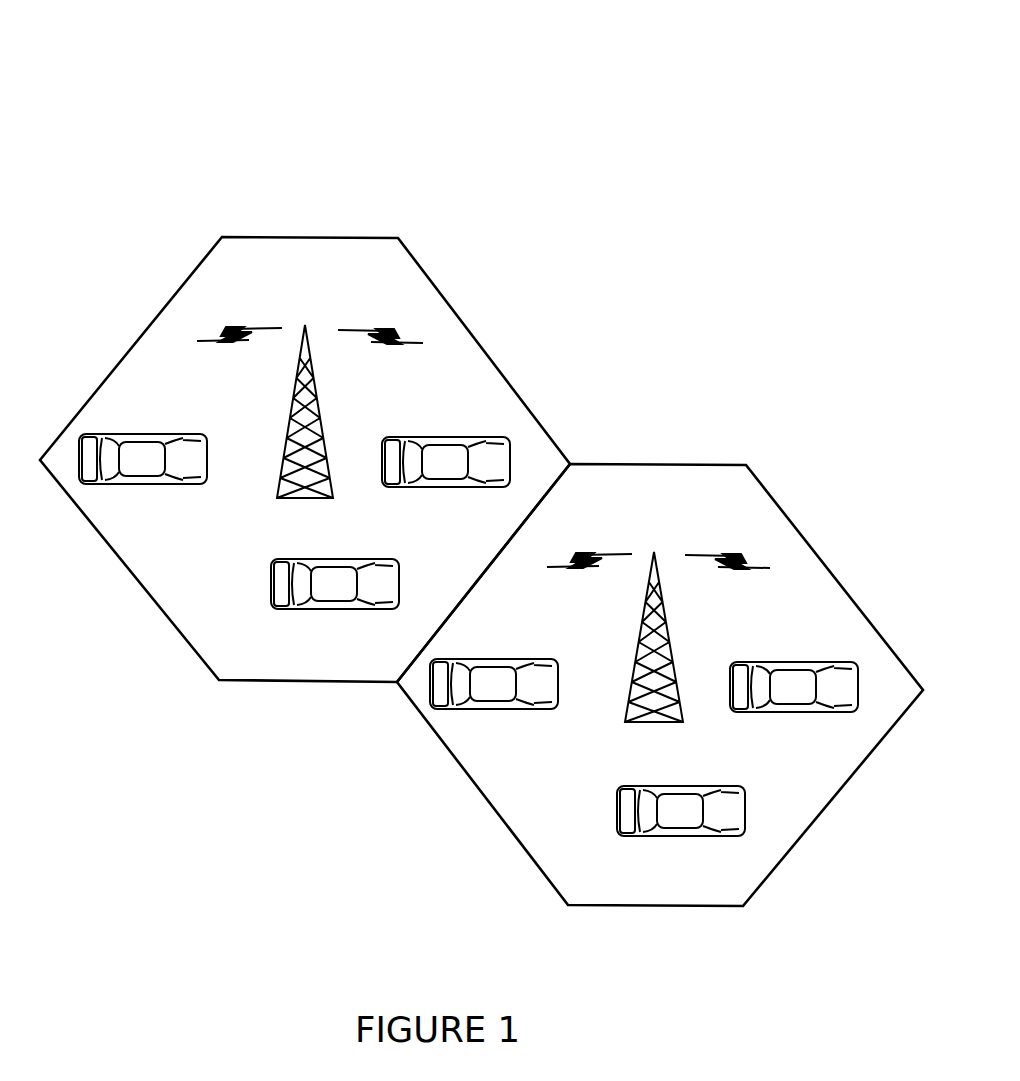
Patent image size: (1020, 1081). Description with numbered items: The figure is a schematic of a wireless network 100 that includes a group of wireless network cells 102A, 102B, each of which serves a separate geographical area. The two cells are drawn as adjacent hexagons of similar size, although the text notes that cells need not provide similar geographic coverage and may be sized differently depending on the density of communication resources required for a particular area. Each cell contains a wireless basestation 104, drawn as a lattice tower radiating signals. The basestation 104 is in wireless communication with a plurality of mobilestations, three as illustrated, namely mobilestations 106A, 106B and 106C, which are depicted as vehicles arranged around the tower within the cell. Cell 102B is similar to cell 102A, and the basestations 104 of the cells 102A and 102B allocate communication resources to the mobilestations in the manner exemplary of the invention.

The wireless network 100 is at (624, 64).
The wireless network cell 102A is at (350, 238).
The wireless network cell 102B is at (672, 462).
The basestation 104 is at (668, 629).
The mobilestation 106A is at (475, 660).
The mobilestation 106B is at (745, 665).
The mobilestation 106C is at (670, 790).